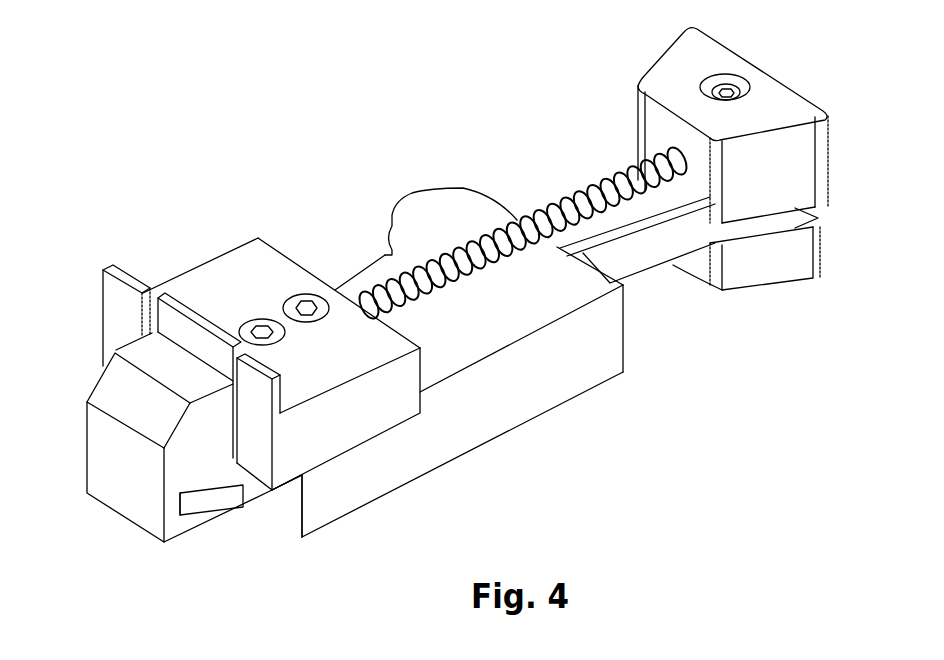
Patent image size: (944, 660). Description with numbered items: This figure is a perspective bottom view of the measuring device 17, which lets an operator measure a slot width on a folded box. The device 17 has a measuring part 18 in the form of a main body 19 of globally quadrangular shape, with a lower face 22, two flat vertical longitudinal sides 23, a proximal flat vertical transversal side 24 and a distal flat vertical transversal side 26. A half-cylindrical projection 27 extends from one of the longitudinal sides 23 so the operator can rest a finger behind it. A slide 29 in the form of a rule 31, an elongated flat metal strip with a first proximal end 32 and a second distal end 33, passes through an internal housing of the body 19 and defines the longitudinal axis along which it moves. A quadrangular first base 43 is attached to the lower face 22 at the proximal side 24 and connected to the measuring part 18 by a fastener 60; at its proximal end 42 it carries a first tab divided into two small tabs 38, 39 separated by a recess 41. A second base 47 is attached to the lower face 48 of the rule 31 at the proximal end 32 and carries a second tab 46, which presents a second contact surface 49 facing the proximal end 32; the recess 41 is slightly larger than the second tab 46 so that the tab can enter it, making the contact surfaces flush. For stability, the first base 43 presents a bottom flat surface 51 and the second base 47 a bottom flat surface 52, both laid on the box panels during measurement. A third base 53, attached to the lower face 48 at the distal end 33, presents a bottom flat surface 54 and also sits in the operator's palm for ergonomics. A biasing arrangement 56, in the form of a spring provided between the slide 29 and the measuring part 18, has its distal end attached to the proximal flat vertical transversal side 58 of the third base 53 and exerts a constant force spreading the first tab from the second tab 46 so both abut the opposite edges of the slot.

The measuring device 17 is at (330, 150).
The measuring part 18 is at (440, 478).
The main body 19 is at (626, 373).
The lower face 22 is at (450, 362).
The flat vertical longitudinal sides 23 is at (587, 372).
The proximal flat vertical transversal side 24 is at (285, 505).
The distal flat vertical transversal side 26 is at (503, 208).
The projection 27 is at (428, 188).
The slide 29 is at (673, 280).
The rule 31 is at (615, 233).
The first proximal end 32 is at (183, 495).
The second distal end 33 is at (822, 215).
The small tab 38 is at (120, 268).
The small tab 39 is at (258, 372).
The recess 41 is at (223, 385).
The proximal end 42 is at (313, 413).
The first base 43 is at (256, 237).
The second tab 46 is at (190, 307).
The second base 47 is at (93, 392).
The lower face 48 is at (200, 482).
The second contact surface 49 is at (147, 313).
The bottom flat surface 51 is at (343, 318).
The bottom flat surface 52 is at (142, 352).
The third base 53 is at (832, 178).
The bottom flat surface 54 is at (716, 48).
The biasing arrangement 56 is at (506, 320).
The proximal flat vertical transversal side 58 is at (652, 112).
The fastener 60 is at (306, 300).